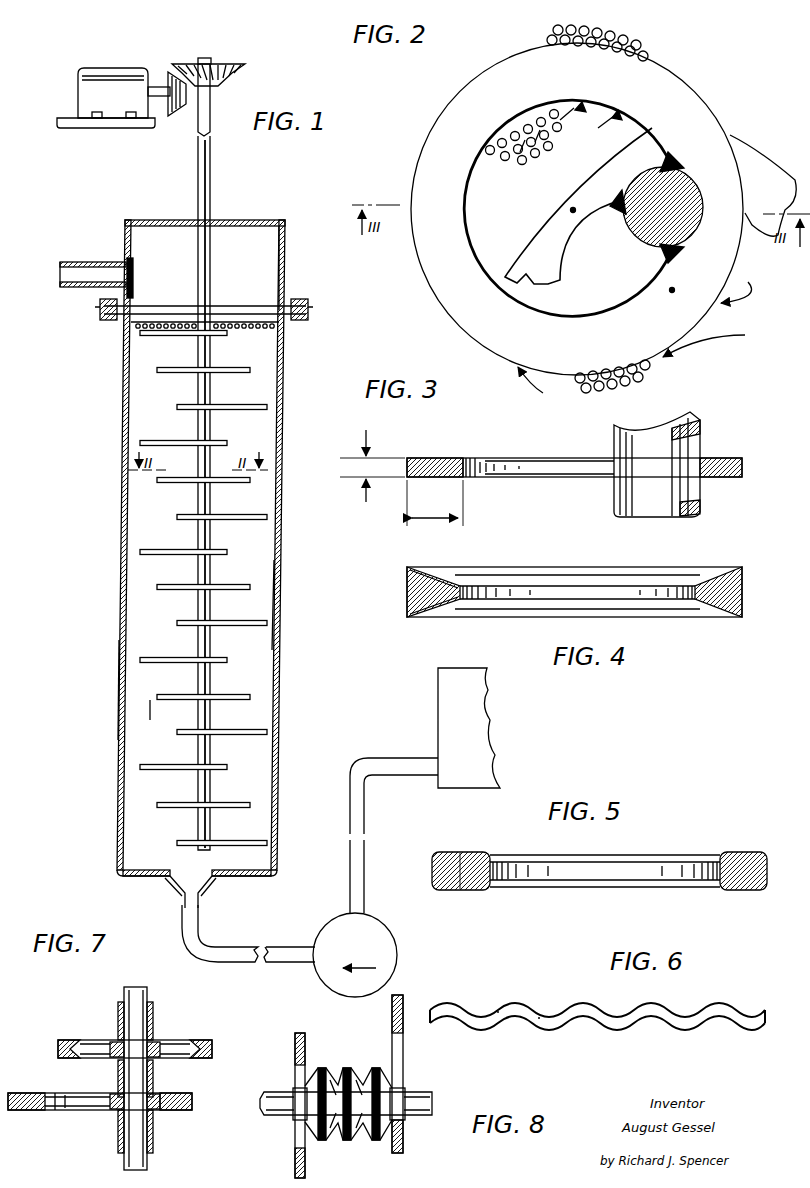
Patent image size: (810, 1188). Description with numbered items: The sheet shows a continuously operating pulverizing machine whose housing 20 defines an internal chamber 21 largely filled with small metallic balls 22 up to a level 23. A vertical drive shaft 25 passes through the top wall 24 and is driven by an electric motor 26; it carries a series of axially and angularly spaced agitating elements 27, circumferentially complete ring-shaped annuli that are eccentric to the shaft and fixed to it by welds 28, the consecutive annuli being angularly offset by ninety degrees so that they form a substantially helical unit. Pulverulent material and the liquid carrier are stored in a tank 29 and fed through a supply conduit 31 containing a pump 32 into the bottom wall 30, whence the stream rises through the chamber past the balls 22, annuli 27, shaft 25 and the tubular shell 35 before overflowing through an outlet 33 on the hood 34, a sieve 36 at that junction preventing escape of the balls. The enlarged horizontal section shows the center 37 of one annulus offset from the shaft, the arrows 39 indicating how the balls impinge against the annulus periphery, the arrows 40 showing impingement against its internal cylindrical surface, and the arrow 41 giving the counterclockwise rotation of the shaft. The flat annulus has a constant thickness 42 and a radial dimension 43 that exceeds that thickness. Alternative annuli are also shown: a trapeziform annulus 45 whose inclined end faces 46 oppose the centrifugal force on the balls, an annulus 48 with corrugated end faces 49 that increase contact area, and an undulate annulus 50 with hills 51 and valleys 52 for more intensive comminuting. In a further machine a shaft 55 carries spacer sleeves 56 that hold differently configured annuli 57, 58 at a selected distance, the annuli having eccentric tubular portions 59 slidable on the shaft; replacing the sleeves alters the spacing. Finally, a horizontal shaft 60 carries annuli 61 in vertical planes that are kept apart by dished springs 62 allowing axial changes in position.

In FIG. 1, the housing 20 is at (116, 687).
In FIG. 1, the internal chamber 21 is at (249, 770).
In FIG. 1, the balls 22 is at (135, 326).
In FIG. 2, the balls 22 is at (553, 30).
In FIG. 1, the level 23 is at (255, 318).
In FIG. 1, the top wall 24 is at (155, 220).
In FIG. 1, the drive shaft 25 is at (197, 497).
In FIG. 2, the drive shaft 25 is at (690, 228).
In FIG. 3, the drive shaft 25 is at (633, 484).
In FIG. 1, the electric motor 26 is at (80, 78).
In FIG. 1, the agitating elements 27 is at (160, 480).
In FIG. 2, the agitating elements 27 is at (652, 83).
In FIG. 3, the agitating elements 27 is at (727, 478).
In FIG. 2, the welds 28 is at (674, 166).
In FIG. 1, the tank 29 is at (467, 707).
In FIG. 1, the bottom wall 30 is at (258, 876).
In FIG. 1, the supply conduit 31 is at (200, 928).
In FIG. 1, the pump 32 is at (385, 958).
In FIG. 1, the outlet 33 is at (76, 261).
In FIG. 1, the hood 34 is at (287, 246).
In FIG. 1, the shell 35 is at (280, 597).
In FIG. 1, the sieve 36 is at (134, 279).
In FIG. 2, the center 37 is at (575, 213).
In FIG. 2, the arrows 39 is at (505, 392).
In FIG. 2, the arrows 40 is at (497, 162).
In FIG. 2, the arrow 41 is at (622, 195).
In FIG. 3, the thickness 42 is at (371, 466).
In FIG. 3, the radial dimension 43 is at (435, 503).
In FIG. 4, the ring-shaped annulus 45 is at (715, 621).
In FIG. 4, the inclined end faces 46 is at (443, 577).
In FIG. 5, the annulus 48 is at (739, 851).
In FIG. 5, the end faces 49 is at (462, 851).
In FIG. 6, the annulus 50 is at (730, 1002).
In FIG. 6, the hills 51 is at (503, 1006).
In FIG. 6, the valleys 52 is at (540, 1012).
In FIG. 7, the shaft 55 is at (147, 990).
In FIG. 7, the spacer sleeves 56 is at (153, 1020).
In FIG. 7, the annulus 57 is at (196, 1040).
In FIG. 7, the annulus 58 is at (30, 1112).
In FIG. 7, the eccentric tubular portions 59 is at (115, 1042).
In FIG. 8, the horizontal shaft 60 is at (418, 1097).
In FIG. 8, the annuli 61 is at (296, 1168).
In FIG. 8, the dished springs 62 is at (352, 1073).